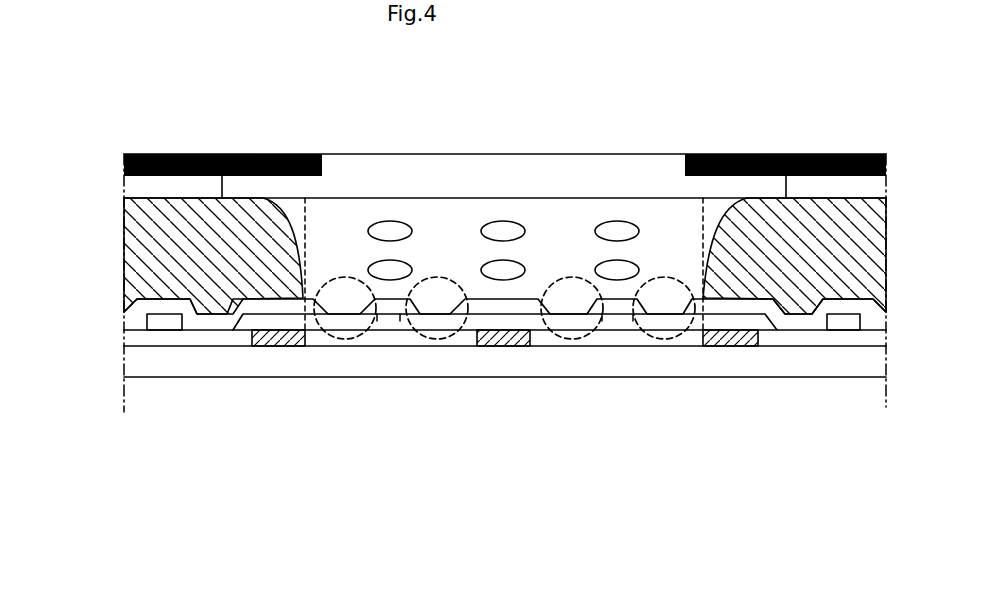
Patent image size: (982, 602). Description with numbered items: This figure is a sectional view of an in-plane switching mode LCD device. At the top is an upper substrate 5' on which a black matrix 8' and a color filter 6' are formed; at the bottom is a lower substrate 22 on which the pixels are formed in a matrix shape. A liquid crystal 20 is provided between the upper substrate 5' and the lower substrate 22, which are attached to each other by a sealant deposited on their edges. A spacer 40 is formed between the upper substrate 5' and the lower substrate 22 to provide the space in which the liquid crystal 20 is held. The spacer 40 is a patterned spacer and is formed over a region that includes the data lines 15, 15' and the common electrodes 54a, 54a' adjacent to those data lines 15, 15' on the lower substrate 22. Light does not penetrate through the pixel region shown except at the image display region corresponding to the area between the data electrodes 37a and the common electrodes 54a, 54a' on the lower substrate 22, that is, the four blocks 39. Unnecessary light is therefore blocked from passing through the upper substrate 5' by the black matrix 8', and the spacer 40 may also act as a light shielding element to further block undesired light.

The upper substrate 5' is at (460, 136).
The color filter 6' is at (505, 142).
The black matrix 8' is at (505, 136).
The liquid crystal 20 is at (388, 231).
The spacer 40 is at (145, 278).
The blocks 39 is at (345, 340).
The data electrode 37a is at (387, 322).
The data line 15 is at (168, 375).
The data line 15' is at (836, 379).
The common electrode 54a is at (384, 395).
The common electrode 54a' is at (732, 385).
The lower substrate 22 is at (101, 380).